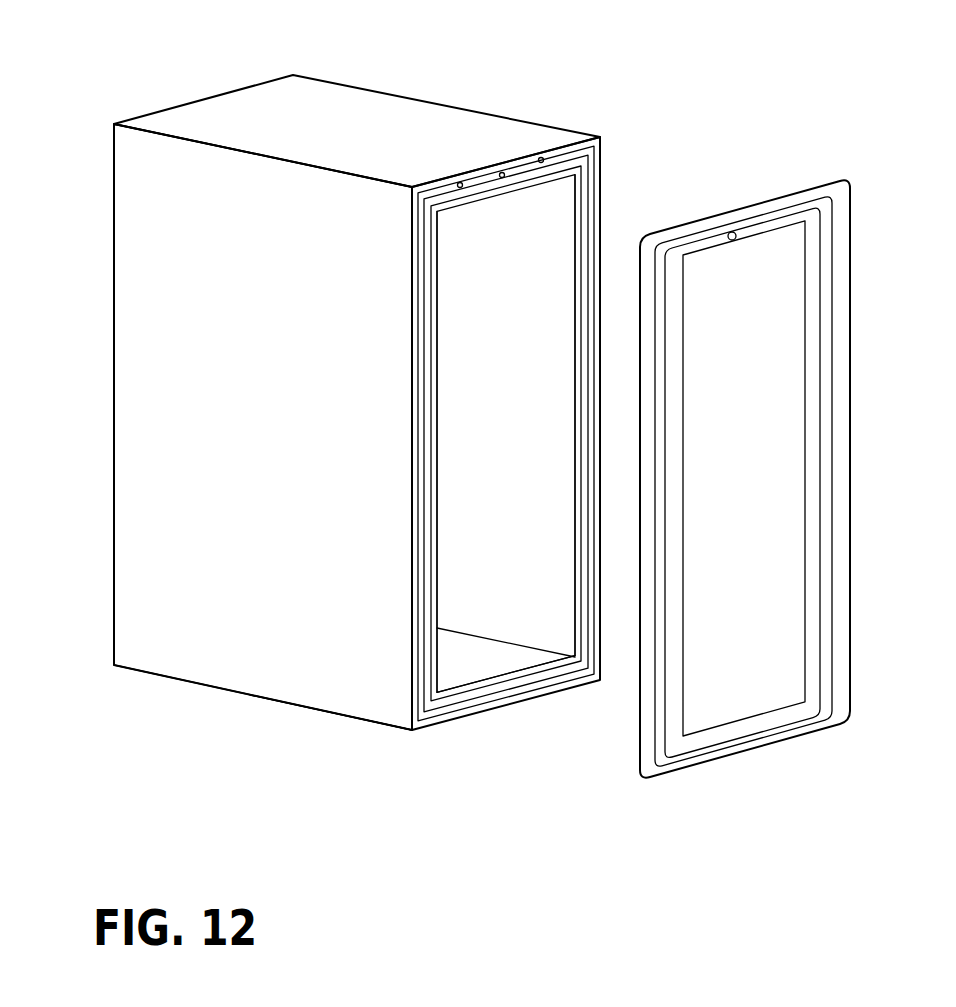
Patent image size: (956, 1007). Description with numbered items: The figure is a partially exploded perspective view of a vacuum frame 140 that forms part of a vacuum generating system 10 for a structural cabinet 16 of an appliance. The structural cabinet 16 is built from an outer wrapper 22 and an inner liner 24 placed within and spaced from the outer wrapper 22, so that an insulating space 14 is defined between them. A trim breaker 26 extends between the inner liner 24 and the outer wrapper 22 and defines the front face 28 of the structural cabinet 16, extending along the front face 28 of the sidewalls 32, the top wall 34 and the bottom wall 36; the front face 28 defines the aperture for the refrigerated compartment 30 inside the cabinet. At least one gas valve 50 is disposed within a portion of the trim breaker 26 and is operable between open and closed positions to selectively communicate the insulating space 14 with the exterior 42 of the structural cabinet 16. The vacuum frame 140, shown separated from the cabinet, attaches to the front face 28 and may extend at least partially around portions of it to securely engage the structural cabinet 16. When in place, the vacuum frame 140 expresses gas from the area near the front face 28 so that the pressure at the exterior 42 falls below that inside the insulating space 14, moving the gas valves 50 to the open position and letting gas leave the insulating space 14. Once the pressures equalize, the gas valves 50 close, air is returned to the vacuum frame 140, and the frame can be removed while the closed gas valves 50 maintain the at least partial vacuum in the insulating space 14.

The vacuum generating system 10 is at (448, 440).
The insulating space 14 is at (182, 256).
The structural cabinet 16 is at (365, 422).
The outer wrapper 22 is at (192, 481).
The inner liner 24 is at (460, 655).
The trim breaker 26 is at (541, 160).
The front face 28 is at (600, 185).
The refrigerated compartment 30 is at (515, 608).
The sidewall 32 is at (172, 587).
The top wall 34 is at (232, 110).
The bottom wall 36 is at (365, 720).
The exterior 42 is at (423, 437).
The gas valve 50 is at (460, 185).
The vacuum frame 140 is at (722, 772).